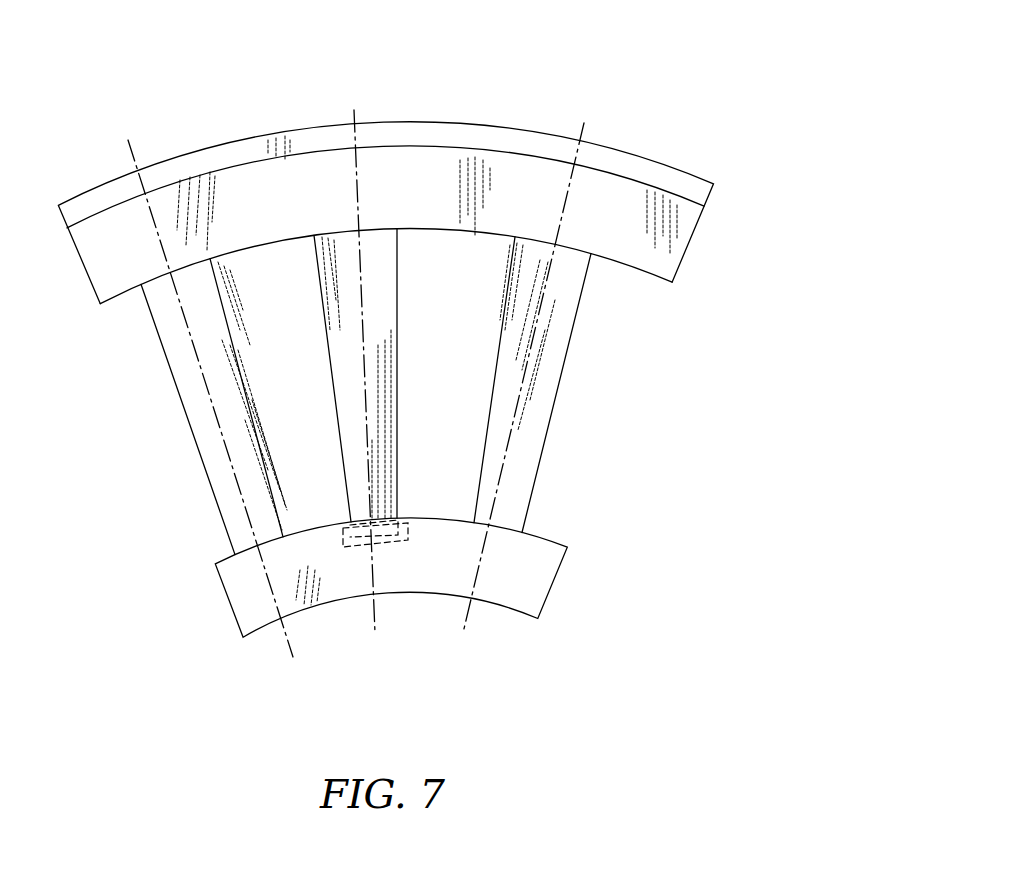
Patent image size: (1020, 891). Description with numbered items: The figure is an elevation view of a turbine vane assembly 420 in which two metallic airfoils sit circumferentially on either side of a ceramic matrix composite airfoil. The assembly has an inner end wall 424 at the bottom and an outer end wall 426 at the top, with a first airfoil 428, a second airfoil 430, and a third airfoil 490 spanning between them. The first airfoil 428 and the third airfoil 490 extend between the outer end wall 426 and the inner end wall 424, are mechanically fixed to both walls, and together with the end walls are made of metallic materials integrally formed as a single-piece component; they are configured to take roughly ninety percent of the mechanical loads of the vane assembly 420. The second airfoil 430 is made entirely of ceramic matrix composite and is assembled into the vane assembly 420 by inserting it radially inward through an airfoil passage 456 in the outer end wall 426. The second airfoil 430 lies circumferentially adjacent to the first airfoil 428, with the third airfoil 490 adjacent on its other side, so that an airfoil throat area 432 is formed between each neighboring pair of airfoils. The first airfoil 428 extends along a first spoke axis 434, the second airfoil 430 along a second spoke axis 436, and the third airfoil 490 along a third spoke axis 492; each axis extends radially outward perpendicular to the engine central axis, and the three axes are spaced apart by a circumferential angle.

The turbine vane assembly 420 is at (702, 162).
The inner end wall 424 is at (548, 540).
The outer end wall 426 is at (635, 270).
The first airfoil 428 is at (163, 339).
The second airfoil 430 is at (343, 470).
The third airfoil 490 is at (556, 405).
The airfoil throat area 432 is at (292, 293).
The airfoil passage 456 is at (332, 188).
The first spoke axis 434 is at (293, 647).
The second spoke axis 436 is at (375, 605).
The third spoke axis 492 is at (470, 613).